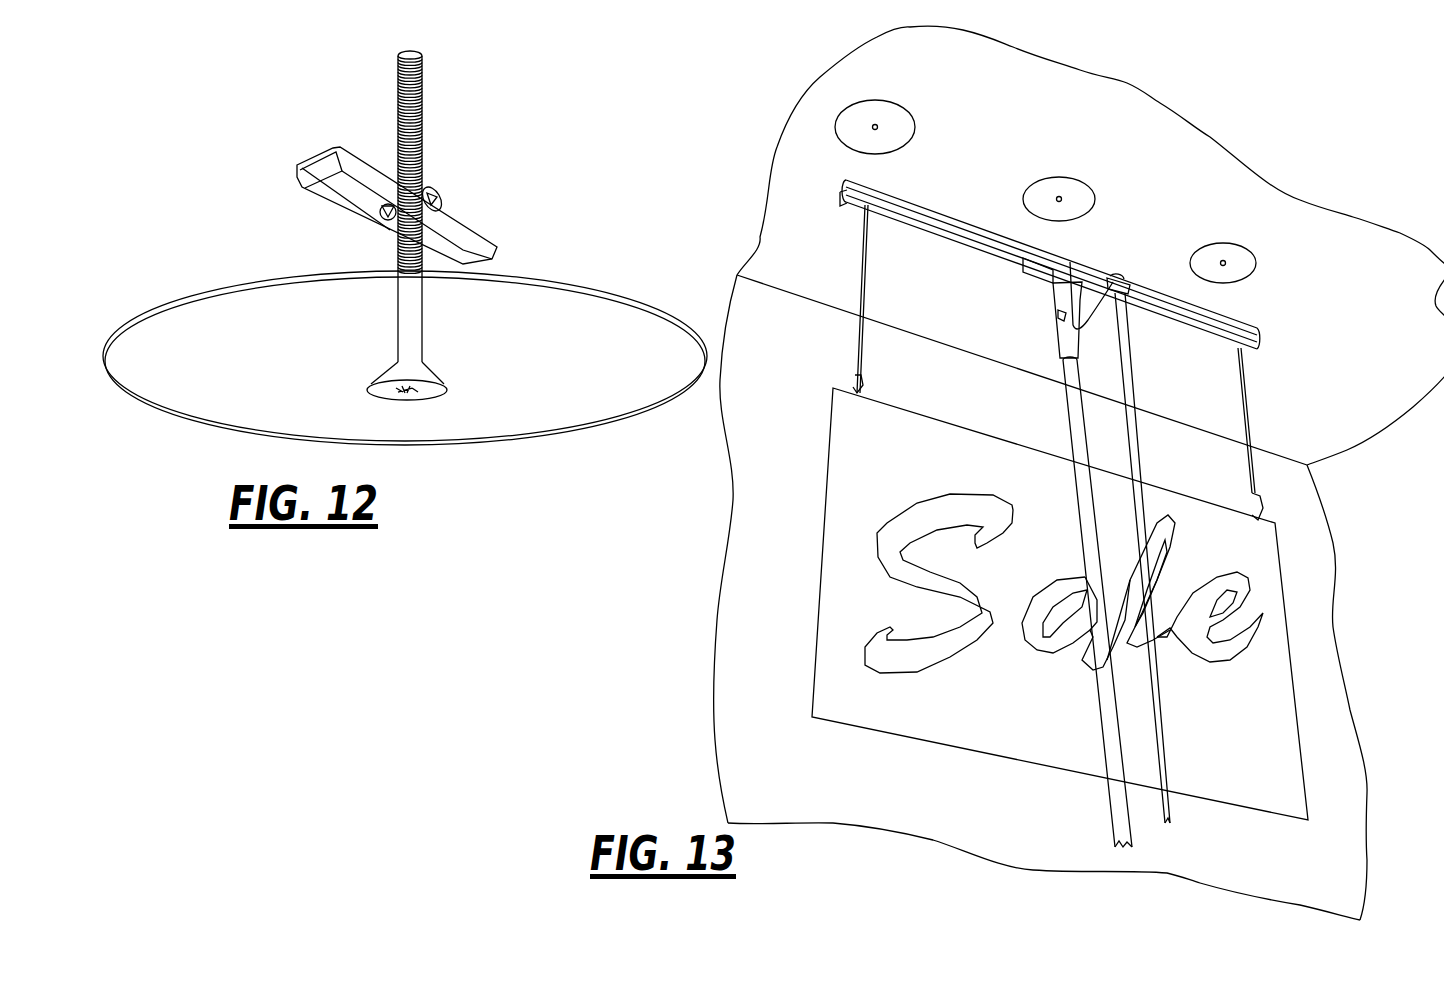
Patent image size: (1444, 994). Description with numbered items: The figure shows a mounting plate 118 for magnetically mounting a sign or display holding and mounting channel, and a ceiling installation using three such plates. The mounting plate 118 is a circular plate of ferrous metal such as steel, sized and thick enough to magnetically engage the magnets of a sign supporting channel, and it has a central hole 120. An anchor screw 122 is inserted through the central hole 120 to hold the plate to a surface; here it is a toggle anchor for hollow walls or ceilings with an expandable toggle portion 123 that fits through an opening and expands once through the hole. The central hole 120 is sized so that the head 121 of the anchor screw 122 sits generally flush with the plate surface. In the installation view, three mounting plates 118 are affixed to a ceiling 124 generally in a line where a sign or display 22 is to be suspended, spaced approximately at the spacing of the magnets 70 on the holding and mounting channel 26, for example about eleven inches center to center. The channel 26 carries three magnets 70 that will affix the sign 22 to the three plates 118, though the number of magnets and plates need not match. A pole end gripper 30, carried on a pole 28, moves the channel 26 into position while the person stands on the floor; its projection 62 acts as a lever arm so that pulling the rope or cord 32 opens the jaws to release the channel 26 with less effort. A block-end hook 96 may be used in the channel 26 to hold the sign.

In FIG. 13, the sign or display 22 is at (1277, 723).
In FIG. 13, the holding and mounting channel 26 is at (847, 206).
In FIG. 13, the first pole 28 is at (1108, 805).
In FIG. 13, the pole end gripper 30 is at (1057, 327).
In FIG. 13, the rope or cord 32 is at (1172, 812).
In FIG. 13, the projection 62 is at (1098, 278).
In FIG. 13, the magnets 70 is at (865, 180).
In FIG. 13, the block-end hook 96 is at (857, 332).
In FIG. 12, the mounting plate 118 is at (548, 308).
In FIG. 13, the mounting plate 118 is at (897, 117).
In FIG. 12, the central hole 120 is at (370, 397).
In FIG. 12, the head 121 is at (425, 400).
In FIG. 12, the anchor screw 122 is at (392, 241).
In FIG. 12, the expandable toggle portion 123 is at (440, 181).
In FIG. 13, the ceiling 124 is at (807, 108).